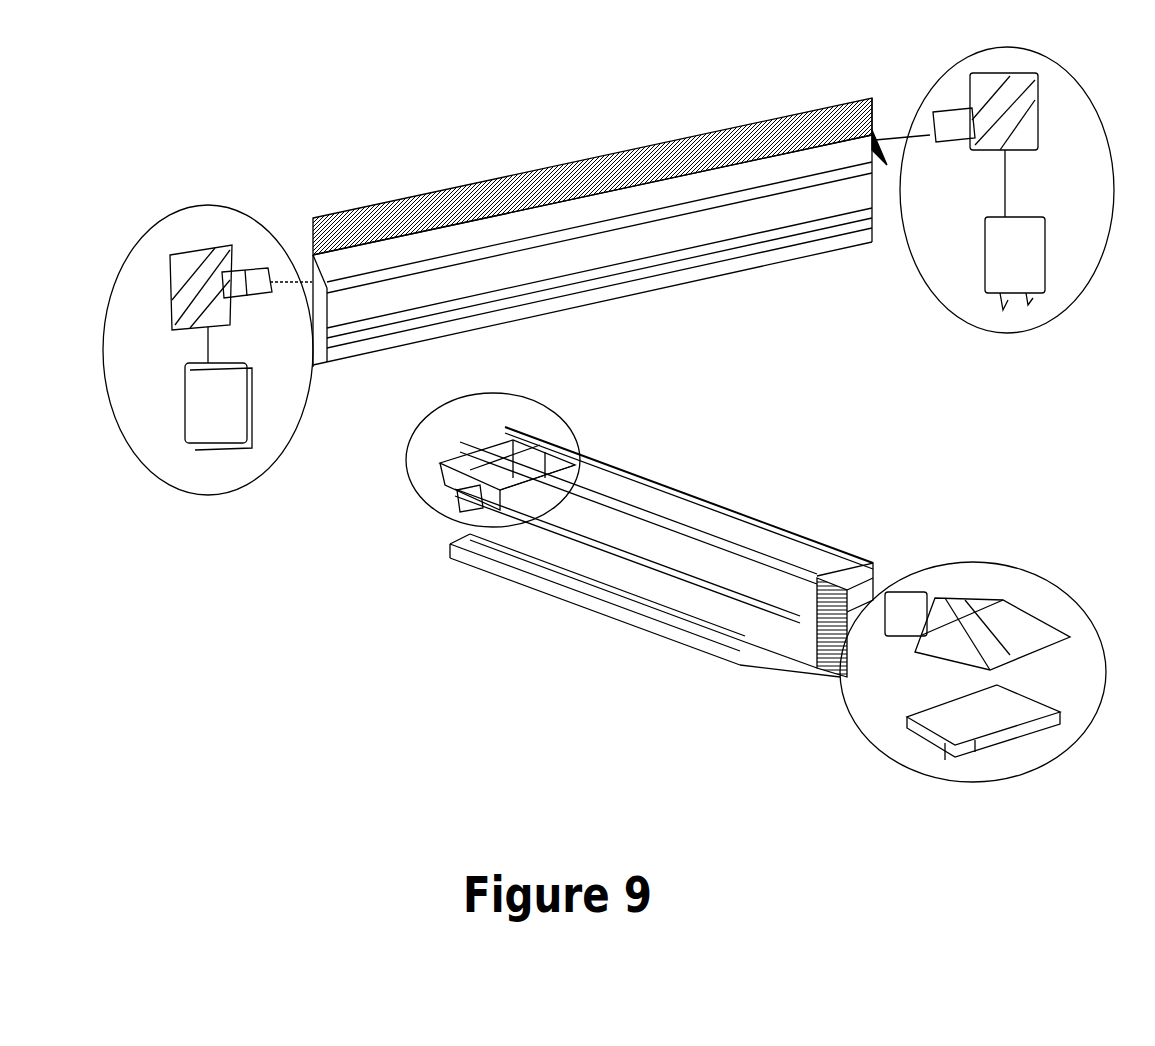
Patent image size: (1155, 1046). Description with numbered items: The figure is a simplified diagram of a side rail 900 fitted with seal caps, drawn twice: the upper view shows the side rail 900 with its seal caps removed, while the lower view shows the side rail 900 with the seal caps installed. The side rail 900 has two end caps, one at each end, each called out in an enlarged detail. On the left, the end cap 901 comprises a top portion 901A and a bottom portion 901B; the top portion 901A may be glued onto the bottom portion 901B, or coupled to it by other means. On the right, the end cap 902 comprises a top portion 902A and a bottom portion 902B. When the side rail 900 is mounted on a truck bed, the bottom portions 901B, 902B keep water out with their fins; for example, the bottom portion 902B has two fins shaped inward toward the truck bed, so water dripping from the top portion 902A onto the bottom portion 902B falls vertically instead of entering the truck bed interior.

The side rail 900 is at (553, 177).
The end cap 901 is at (228, 208).
The top portion 901A is at (185, 280).
The bottom portion 901B is at (230, 408).
The end cap 902 is at (945, 80).
The top portion 902A is at (1083, 32).
The bottom portion 902B is at (1000, 248).